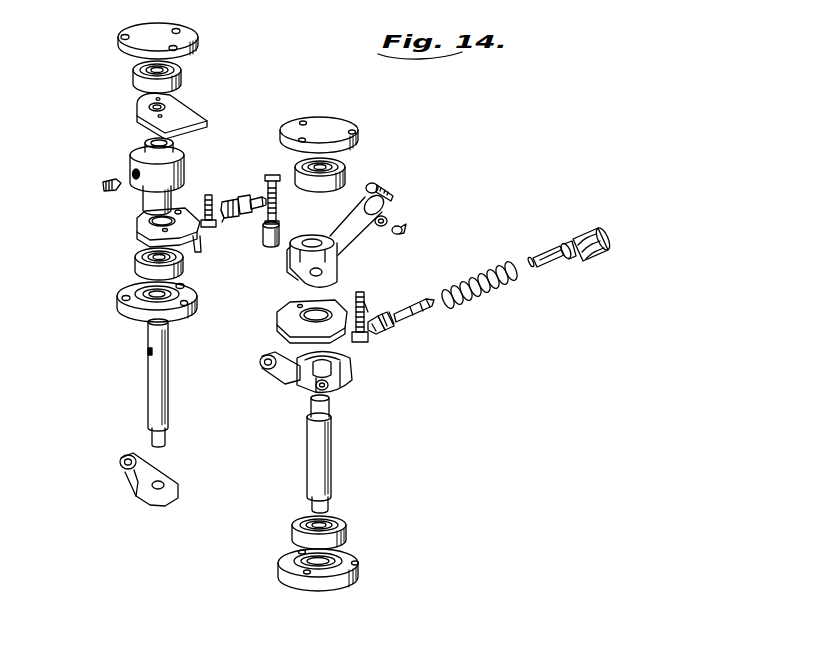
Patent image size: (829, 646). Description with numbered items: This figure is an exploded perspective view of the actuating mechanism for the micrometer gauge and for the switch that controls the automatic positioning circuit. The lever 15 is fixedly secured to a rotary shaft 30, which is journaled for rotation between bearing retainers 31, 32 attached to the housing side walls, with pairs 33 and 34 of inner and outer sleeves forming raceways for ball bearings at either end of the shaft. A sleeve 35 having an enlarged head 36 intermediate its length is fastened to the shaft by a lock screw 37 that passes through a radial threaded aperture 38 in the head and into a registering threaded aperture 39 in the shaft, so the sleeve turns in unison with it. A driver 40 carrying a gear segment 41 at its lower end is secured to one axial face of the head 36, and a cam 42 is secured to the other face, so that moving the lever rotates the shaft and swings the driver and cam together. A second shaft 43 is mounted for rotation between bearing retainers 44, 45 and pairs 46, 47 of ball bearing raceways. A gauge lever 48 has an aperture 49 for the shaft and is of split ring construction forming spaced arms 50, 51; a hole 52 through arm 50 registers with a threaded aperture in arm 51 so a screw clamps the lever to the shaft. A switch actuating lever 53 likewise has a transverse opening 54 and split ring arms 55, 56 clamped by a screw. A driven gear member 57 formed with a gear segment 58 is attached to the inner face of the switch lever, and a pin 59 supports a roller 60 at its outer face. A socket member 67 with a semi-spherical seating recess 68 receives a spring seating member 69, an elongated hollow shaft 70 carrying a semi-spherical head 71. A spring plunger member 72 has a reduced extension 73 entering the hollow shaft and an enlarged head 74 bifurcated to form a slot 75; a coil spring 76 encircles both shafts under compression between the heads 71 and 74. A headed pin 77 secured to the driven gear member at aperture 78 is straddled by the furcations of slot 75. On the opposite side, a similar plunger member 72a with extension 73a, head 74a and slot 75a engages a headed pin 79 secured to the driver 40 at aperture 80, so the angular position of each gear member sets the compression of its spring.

The lever 15 is at (138, 485).
The rotary shaft 30 is at (150, 398).
The bearing retainer 31 is at (118, 308).
The bearing retainer 32 is at (128, 52).
The pair of inner and outer sleeves 33 is at (136, 262).
The pair of inner and outer sleeves 34 is at (138, 77).
The sleeve 35 is at (143, 193).
The enlarged head 36 is at (130, 152).
The lock screw 37 is at (100, 184).
The radial threaded aperture 38 is at (133, 172).
The threaded aperture 39 is at (148, 352).
The driver 40 is at (137, 226).
The gear segment 41 is at (201, 247).
The cam 42 is at (180, 117).
The second shaft 43 is at (331, 462).
The bearing retainer 44 is at (360, 572).
The bearing retainer 45 is at (345, 123).
The pair of ball bearing raceways 46 is at (349, 532).
The pair of ball bearing raceways 47 is at (348, 172).
The lever 48 is at (298, 381).
The aperture 49 is at (331, 358).
The arm 50 is at (336, 393).
The arm 51 is at (351, 380).
The hole 52 is at (313, 397).
The switch actuating lever 53 is at (358, 236).
The transverse opening 54 is at (322, 241).
The arm 55 is at (291, 262).
The arm 56 is at (340, 267).
The driven gear member 57 is at (290, 320).
The gear segment 58 is at (296, 305).
The pin 59 is at (279, 204).
The roller 60 is at (266, 245).
The socket member 67 is at (593, 230).
The semi-spherical seating recess 68 is at (580, 254).
The spring seating member 69 is at (544, 251).
The elongated hollow shaft 70 is at (546, 268).
The enlarged semi-spherical head 71 is at (571, 262).
The spring plunger member 72 is at (404, 323).
The spring plunger member 72a is at (247, 197).
The extension 73 is at (430, 306).
The extension 73a is at (258, 198).
The enlarged head 74 is at (384, 315).
The enlarged head 74a is at (234, 201).
The slot 75 is at (375, 333).
The slot 75a is at (222, 217).
The coil spring 76 is at (470, 282).
The headed pin 77 is at (366, 306).
The aperture 78 is at (357, 302).
The headed pin 79 is at (223, 191).
The aperture 80 is at (181, 212).